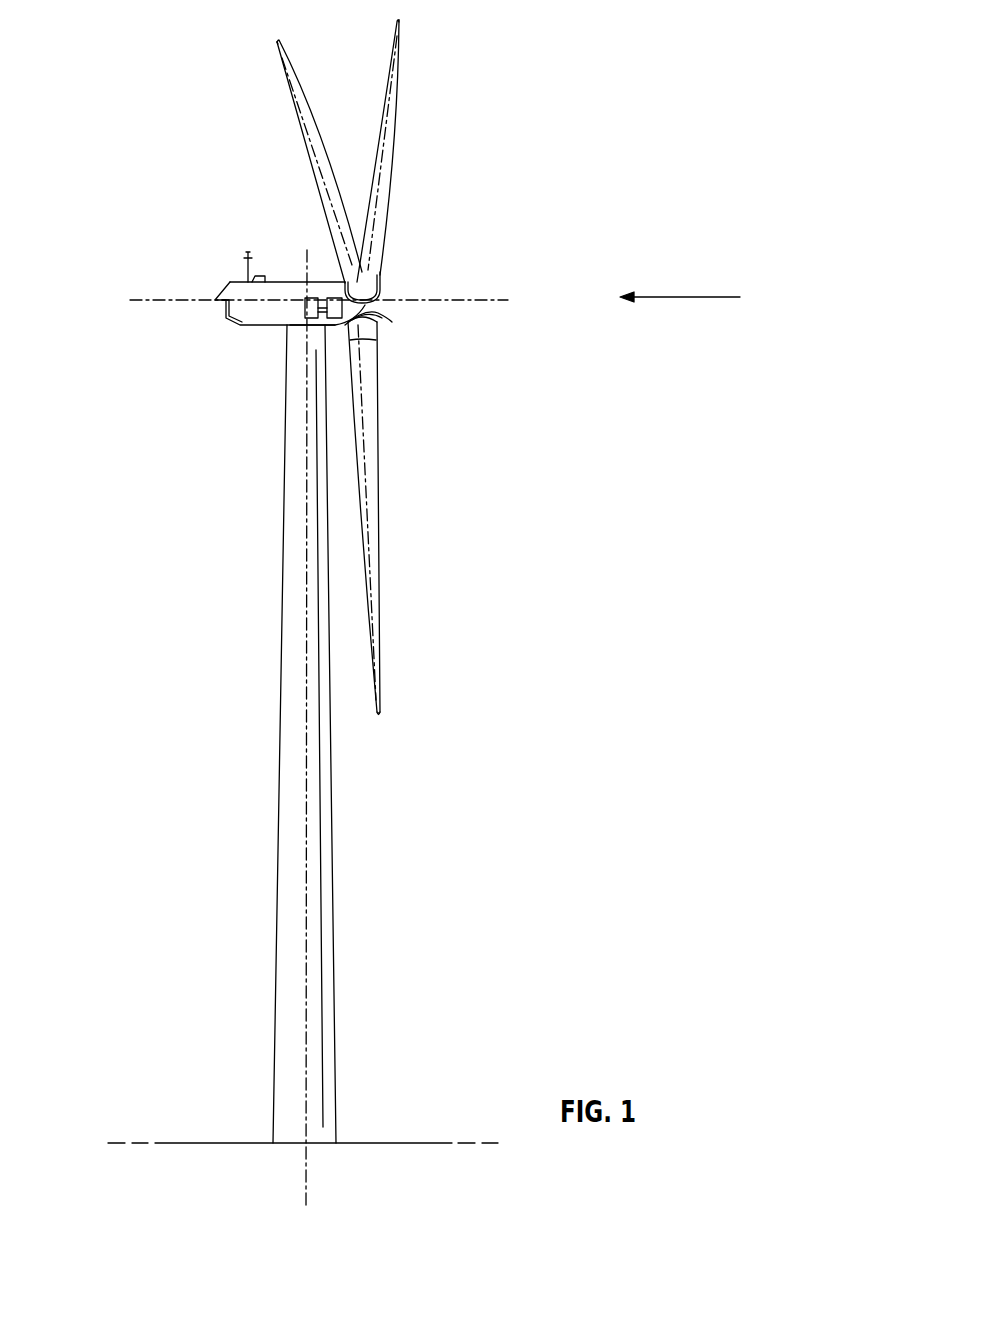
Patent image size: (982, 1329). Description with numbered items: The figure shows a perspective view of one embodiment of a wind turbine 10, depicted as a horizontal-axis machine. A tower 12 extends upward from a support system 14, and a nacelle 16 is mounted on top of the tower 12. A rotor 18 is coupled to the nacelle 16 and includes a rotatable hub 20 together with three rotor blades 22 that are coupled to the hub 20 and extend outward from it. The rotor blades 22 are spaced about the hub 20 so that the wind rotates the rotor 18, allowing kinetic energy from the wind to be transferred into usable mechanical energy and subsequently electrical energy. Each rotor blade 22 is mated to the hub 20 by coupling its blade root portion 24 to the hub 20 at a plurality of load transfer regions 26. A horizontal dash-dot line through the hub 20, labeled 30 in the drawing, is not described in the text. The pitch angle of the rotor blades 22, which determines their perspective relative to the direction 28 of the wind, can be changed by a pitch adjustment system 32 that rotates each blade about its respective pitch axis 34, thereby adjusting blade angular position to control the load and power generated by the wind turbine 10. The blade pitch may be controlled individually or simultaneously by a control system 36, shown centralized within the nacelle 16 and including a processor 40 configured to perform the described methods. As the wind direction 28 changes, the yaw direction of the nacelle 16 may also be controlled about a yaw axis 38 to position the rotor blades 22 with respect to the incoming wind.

The wind turbine 10 is at (88, 78).
The tower 12 is at (277, 902).
The support system 14 is at (244, 1142).
The nacelle 16 is at (250, 326).
The rotor 18 is at (371, 367).
The rotatable hub 20 is at (387, 292).
The rotor blade 22 is at (307, 147).
The blade root portion 24 is at (373, 415).
The load transfer region 26 is at (377, 316).
The direction of the wind 28 is at (703, 297).
The rotor axis 30 is at (448, 304).
The pitch adjustment system 32 is at (363, 340).
The pitch axis 34 is at (292, 103).
The control system 36 is at (305, 327).
The yaw axis 38 is at (308, 778).
The processor 40 is at (314, 298).